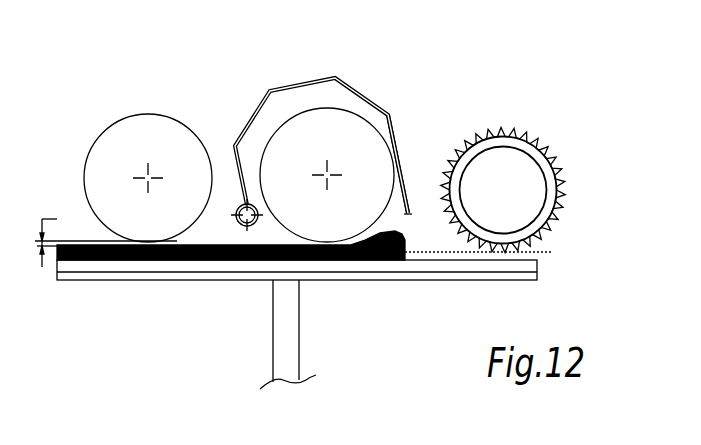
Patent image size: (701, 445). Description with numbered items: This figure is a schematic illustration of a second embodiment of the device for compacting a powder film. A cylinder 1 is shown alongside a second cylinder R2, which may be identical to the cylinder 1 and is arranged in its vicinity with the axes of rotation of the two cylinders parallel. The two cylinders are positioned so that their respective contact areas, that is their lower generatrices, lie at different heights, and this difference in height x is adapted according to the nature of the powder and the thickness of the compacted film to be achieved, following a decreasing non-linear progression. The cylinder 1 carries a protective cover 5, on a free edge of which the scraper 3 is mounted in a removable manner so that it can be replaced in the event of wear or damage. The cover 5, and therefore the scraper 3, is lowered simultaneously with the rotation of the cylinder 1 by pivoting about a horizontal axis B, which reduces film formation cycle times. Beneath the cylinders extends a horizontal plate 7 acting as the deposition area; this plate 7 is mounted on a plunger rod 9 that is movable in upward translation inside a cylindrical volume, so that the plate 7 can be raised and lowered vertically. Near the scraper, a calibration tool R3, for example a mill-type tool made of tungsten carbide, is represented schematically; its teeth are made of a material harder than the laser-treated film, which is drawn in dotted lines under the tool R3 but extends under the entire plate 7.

The cylinder 1 is at (357, 137).
The scraper 3 is at (399, 170).
The protective cover 5 is at (306, 79).
The horizontal plate 7 is at (525, 266).
The plunger rod 9 is at (287, 357).
The horizontal axis B is at (238, 207).
The second cylinder R2 is at (148, 178).
The calibration tool R3 is at (503, 190).
The difference in height x is at (106, 236).